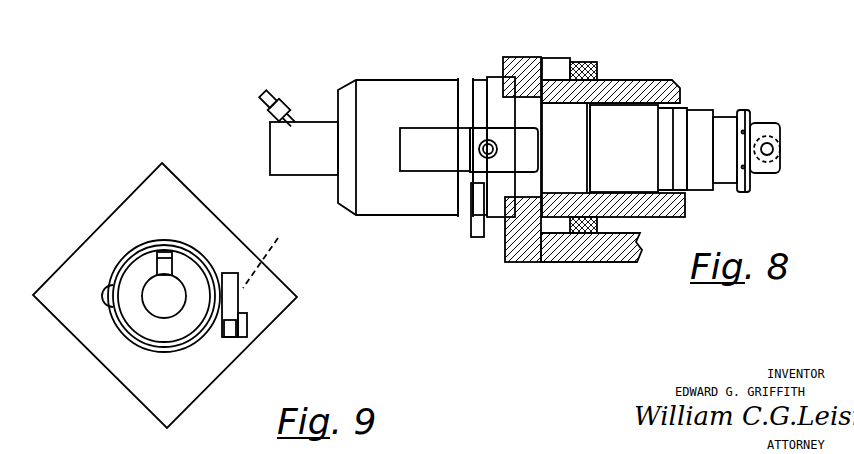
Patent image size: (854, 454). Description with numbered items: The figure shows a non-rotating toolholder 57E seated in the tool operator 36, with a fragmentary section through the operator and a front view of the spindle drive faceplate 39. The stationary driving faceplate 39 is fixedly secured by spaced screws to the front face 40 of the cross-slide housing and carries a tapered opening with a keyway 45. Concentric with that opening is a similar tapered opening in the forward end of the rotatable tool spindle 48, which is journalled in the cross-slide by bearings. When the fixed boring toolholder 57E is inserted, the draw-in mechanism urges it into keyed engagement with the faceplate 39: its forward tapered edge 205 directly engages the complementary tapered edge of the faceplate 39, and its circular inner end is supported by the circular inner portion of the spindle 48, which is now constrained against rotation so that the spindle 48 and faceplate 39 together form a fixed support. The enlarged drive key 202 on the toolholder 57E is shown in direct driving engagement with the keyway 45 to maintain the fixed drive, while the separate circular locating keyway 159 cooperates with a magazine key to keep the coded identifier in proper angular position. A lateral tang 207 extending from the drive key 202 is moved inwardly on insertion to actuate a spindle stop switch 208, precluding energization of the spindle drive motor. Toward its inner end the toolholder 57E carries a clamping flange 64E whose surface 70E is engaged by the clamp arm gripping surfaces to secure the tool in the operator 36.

In FIG. 8, the tool operator 36 is at (503, 63).
In FIG. 8, the driving faceplate 39 is at (537, 263).
In FIG. 9, the driving faceplate 39 is at (143, 205).
In FIG. 8, the front face 40 is at (582, 253).
In FIG. 9, the keyway 45 is at (260, 261).
In FIG. 8, the tool spindle 48 is at (653, 85).
In FIG. 8, the toolholder 57E is at (385, 67).
In FIG. 9, the toolholder 57E is at (180, 330).
In FIG. 8, the clamping flange 64E is at (745, 103).
In FIG. 8, the clamping surface 70E is at (730, 125).
In FIG. 9, the circular locating keyway 159 is at (108, 297).
In FIG. 8, the drive key 202 is at (495, 137).
In FIG. 9, the drive key 202 is at (243, 297).
In FIG. 8, the forward tapered edge 205 is at (530, 107).
In FIG. 8, the lateral tang 207 is at (483, 228).
In FIG. 9, the lateral tang 207 is at (227, 337).
In FIG. 8, the spindle stop switch 208 is at (497, 240).
In FIG. 9, the spindle stop switch 208 is at (233, 327).